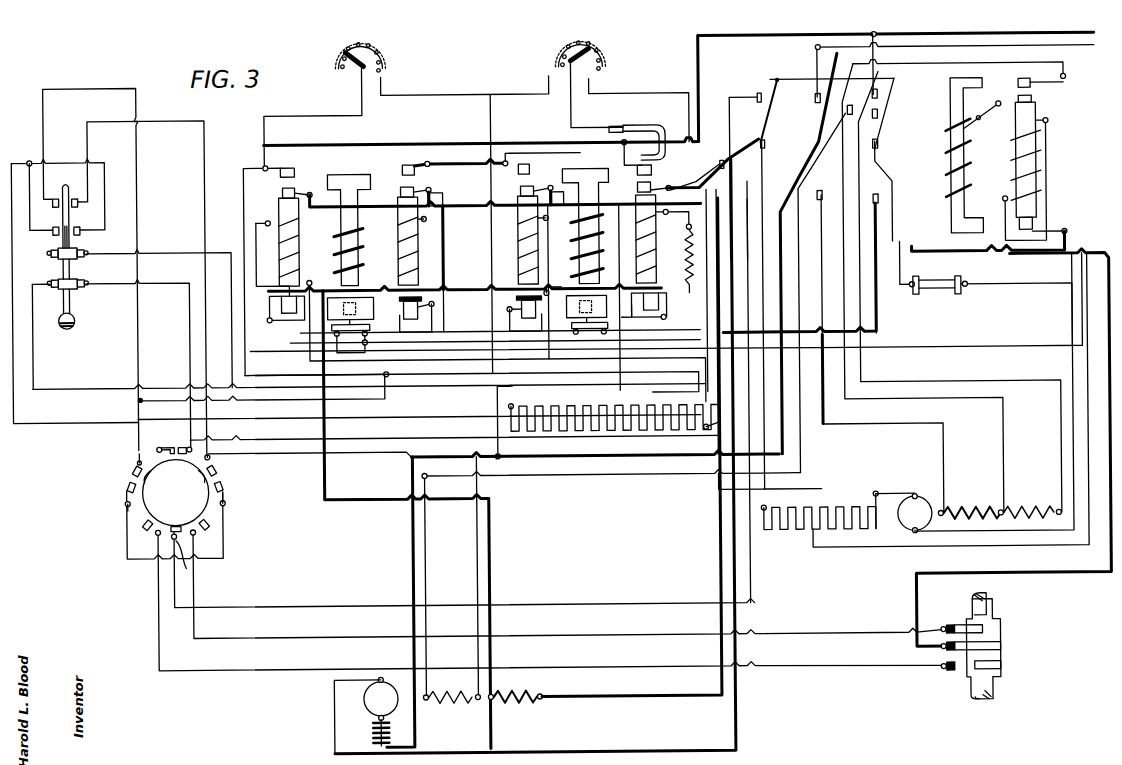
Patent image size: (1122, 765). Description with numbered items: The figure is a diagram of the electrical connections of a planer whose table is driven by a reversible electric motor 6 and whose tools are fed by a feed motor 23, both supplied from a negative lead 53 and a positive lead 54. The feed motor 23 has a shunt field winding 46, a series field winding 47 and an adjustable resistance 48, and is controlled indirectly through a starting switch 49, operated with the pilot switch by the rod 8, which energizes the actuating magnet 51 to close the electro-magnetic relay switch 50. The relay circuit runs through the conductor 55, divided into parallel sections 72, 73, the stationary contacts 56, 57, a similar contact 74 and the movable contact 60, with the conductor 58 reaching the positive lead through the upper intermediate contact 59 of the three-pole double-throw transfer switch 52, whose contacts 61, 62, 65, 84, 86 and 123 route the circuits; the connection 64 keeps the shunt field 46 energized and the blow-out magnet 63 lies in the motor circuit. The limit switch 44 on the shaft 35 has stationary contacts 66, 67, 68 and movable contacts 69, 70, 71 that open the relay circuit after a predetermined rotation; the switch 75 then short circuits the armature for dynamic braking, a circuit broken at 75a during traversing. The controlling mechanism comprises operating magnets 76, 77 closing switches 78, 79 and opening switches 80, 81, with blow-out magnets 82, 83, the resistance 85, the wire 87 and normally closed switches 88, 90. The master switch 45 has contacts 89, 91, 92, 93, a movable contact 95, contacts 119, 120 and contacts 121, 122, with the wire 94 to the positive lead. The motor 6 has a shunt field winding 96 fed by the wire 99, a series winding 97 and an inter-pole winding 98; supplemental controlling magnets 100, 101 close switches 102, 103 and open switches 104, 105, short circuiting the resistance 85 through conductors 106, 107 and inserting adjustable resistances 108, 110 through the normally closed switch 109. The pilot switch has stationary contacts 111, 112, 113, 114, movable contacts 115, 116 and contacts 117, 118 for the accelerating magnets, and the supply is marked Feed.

The reversible electric motor 6 is at (366, 700).
The rod 8 is at (132, 511).
The feed motor 23 is at (910, 520).
The shaft 35 is at (994, 688).
The limit switch 44 is at (1000, 640).
The master switch 45 is at (80, 302).
The shunt field winding 46 is at (1046, 506).
The series field winding 47 is at (984, 506).
The adjustable resistance 48 is at (828, 532).
The starting switch 49 is at (212, 512).
The electro-magnetic relay switch 50 is at (1035, 92).
The actuating magnet 51 is at (1036, 118).
The transfer switch 52 is at (889, 137).
The negative lead 53 is at (1032, 32).
The positive lead 54 is at (1032, 52).
The conductor 55 is at (1025, 574).
The stationary contact 56 is at (206, 530).
The stationary contact 57 is at (188, 566).
The conductor 58 is at (618, 598).
The upper intermediate contact 59 is at (817, 115).
The movable contact 60 is at (174, 527).
The upper central contact 61 is at (817, 99).
The lower central contact 62 is at (817, 197).
The blow-out magnet 63 is at (950, 124).
The connection 64 is at (1018, 376).
The upper contact 65 is at (874, 96).
The stationary contact 66 is at (952, 624).
The stationary contact 67 is at (943, 645).
The stationary contact 68 is at (943, 665).
The movable contact 69 is at (992, 618).
The movable contact 70 is at (1002, 646).
The movable contact 71 is at (1002, 666).
The conductor section 72 is at (801, 625).
The conductor section 73 is at (812, 678).
The contact 74 is at (144, 525).
The switch 75 is at (1032, 228).
The circuit break point 75a is at (890, 108).
The operating magnet 76 is at (276, 212).
The operating magnet 77 is at (668, 208).
The switch 78 is at (292, 186).
The switch 79 is at (652, 175).
The switch 80 is at (298, 322).
The switch 81 is at (642, 318).
The blow-out magnet 82 is at (345, 175).
The blow-out magnet 83 is at (580, 172).
The lower right hand contact 84 is at (883, 195).
The resistance 85 is at (640, 432).
The contact 86 is at (755, 192).
The wire 87 is at (242, 216).
The normally closed switch 88 is at (568, 324).
The contact 89 is at (78, 206).
The normally closed switch 90 is at (330, 325).
The contact 91 is at (55, 206).
The contact 92 is at (80, 232).
The contact 93 is at (55, 234).
The wire 94 is at (90, 430).
The movable contact 95 is at (86, 238).
The shunt field winding 96 is at (466, 705).
The series winding 97 is at (510, 708).
The inter-pole winding 98 is at (372, 735).
The wire 99 is at (702, 484).
The supplemental controlling magnet 100 is at (404, 250).
The supplemental controlling magnet 101 is at (517, 231).
The switch 102 is at (414, 175).
The switch 103 is at (531, 171).
The switch 104 is at (434, 312).
The switch 105 is at (510, 310).
The conductor 106 is at (608, 210).
The conductor 107 is at (580, 230).
The adjustable resistance 108 is at (590, 42).
The normally closed switch 109 is at (642, 124).
The adjustable resistance 110 is at (380, 38).
The stationary contact 111 is at (216, 470).
The stationary contact 112 is at (132, 470).
The contact 113 is at (224, 484).
The contact 114 is at (122, 482).
The movable contact 115 is at (191, 482).
The movable contact 116 is at (159, 483).
The contact 117 is at (178, 445).
The contact 118 is at (157, 449).
The contact 119 is at (84, 258).
The contact 120 is at (52, 258).
The contact 121 is at (84, 288).
The contact 122 is at (52, 288).
The supplemental contact 123 is at (754, 161).
The feed switch Feed is at (747, 168).